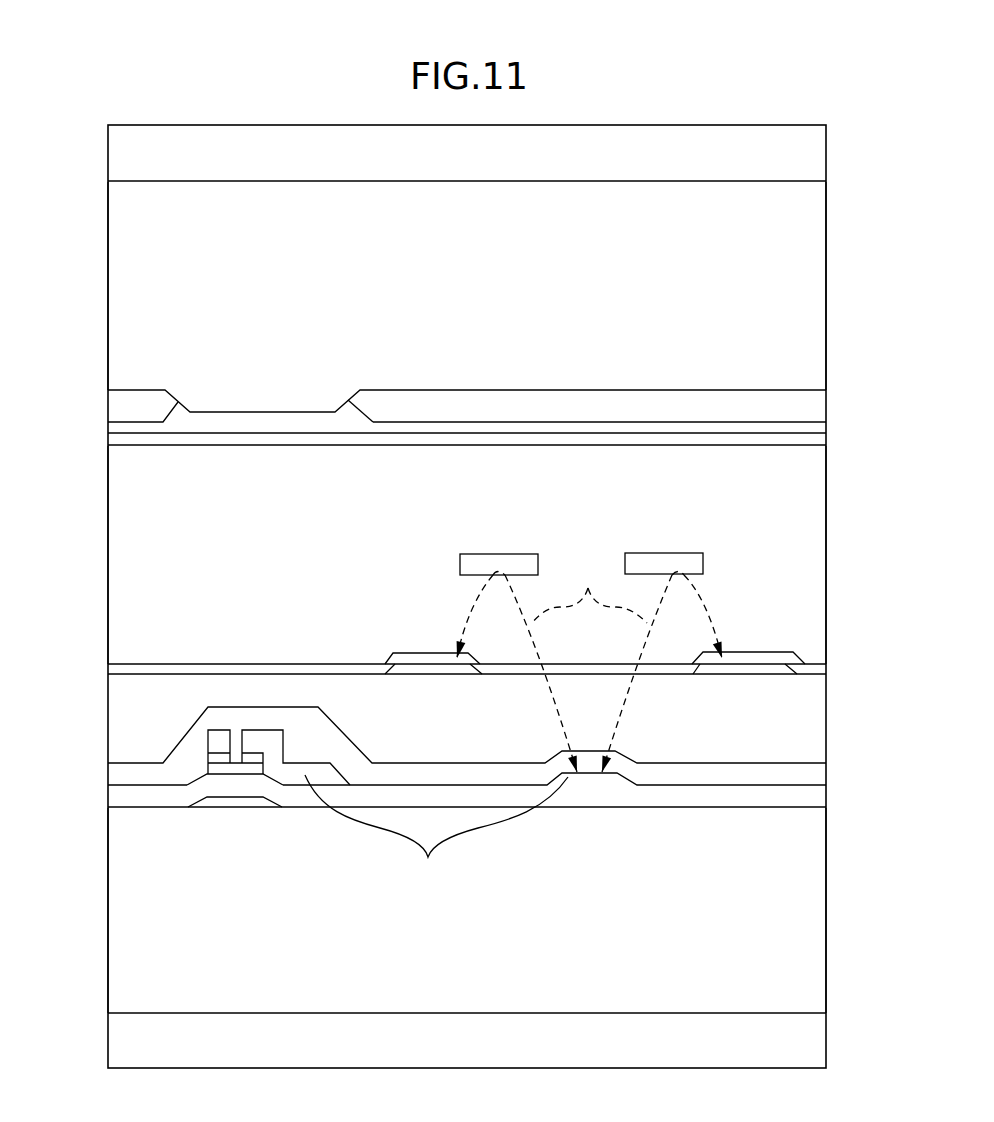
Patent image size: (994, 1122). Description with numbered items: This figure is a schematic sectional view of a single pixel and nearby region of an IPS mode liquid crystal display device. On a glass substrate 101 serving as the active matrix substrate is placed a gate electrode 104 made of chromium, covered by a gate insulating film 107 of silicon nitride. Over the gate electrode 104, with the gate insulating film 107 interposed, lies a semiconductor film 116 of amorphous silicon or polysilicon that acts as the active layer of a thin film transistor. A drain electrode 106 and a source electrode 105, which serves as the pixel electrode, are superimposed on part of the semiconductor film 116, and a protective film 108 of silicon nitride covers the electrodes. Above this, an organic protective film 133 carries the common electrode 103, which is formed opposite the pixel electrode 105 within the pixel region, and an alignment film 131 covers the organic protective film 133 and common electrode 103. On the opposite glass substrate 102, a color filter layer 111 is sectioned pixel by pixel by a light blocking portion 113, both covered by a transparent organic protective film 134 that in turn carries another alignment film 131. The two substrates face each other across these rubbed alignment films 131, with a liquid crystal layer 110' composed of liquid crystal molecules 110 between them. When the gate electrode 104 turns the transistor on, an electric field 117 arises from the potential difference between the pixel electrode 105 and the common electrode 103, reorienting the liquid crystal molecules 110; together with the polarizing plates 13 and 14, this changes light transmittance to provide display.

The polarizing plate 14 is at (810, 156).
The glass substrate 102 is at (810, 268).
The color filter layer 111 is at (810, 405).
The light blocking portion 113 is at (202, 398).
The organic protective film 134 is at (810, 431).
The alignment film 131 is at (123, 440).
The liquid crystal layer 110' is at (511, 555).
The liquid crystal molecules 110 is at (599, 540).
The electric field 117 is at (589, 666).
The common electrode 103 is at (758, 670).
The organic protective film 133 is at (808, 718).
The drain electrode 106 is at (218, 740).
The semiconductor film 116 is at (217, 768).
The protective film 108 is at (808, 773).
The gate insulating film 107 is at (120, 797).
The gate electrode 104 is at (233, 802).
The source electrode 105 is at (436, 832).
The glass substrate 101 is at (810, 914).
The polarizing plate 13 is at (810, 1045).